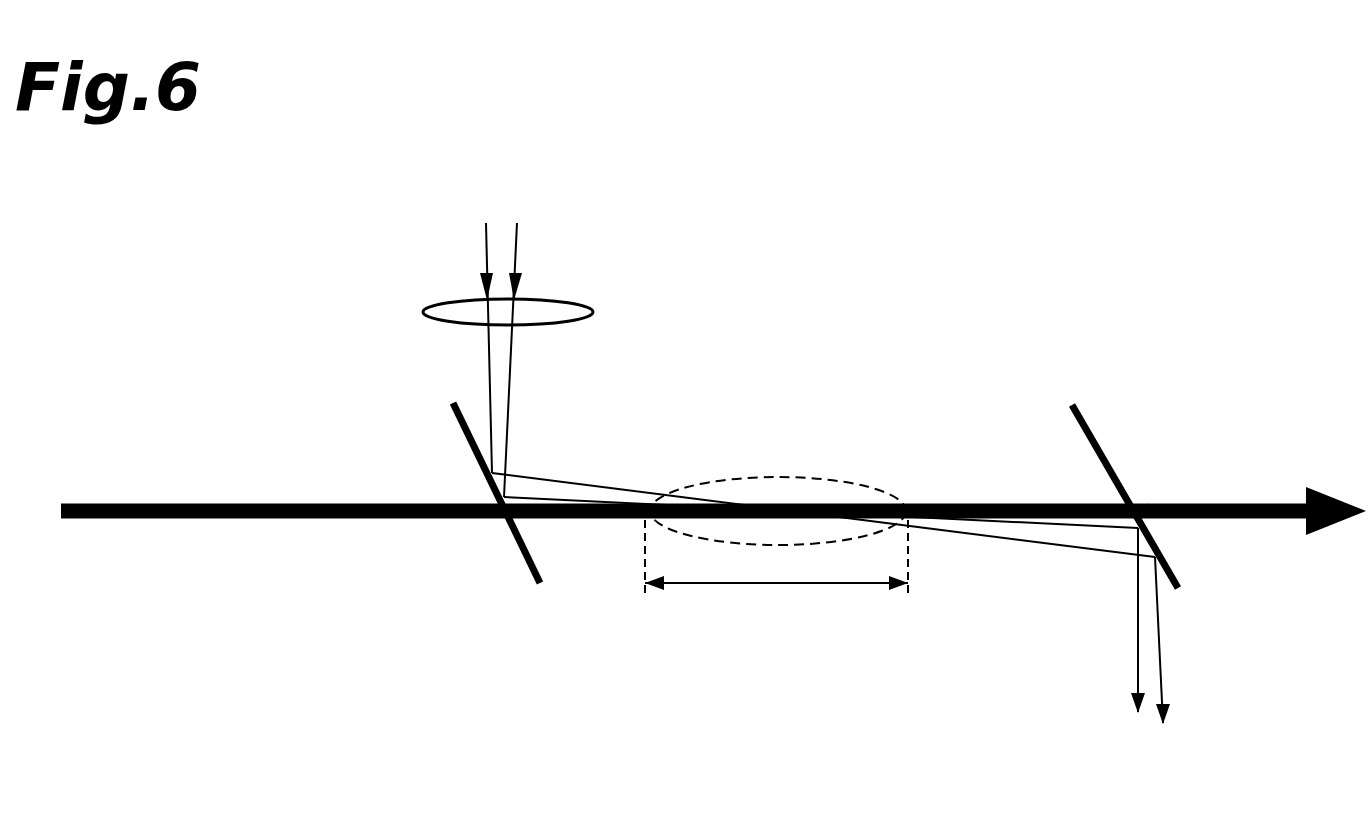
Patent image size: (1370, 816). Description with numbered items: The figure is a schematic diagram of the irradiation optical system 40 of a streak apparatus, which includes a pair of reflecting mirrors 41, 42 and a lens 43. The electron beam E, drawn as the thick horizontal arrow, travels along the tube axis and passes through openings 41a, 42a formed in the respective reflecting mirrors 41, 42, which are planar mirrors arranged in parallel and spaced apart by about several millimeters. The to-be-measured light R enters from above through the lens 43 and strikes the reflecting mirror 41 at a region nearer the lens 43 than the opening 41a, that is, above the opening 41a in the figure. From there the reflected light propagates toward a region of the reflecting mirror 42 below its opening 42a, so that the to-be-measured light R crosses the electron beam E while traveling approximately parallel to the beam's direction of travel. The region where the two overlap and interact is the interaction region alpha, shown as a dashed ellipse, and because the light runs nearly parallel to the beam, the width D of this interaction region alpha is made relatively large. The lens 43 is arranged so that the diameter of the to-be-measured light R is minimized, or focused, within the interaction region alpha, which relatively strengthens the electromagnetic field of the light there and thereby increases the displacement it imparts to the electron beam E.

The irradiation optical system 40 is at (853, 251).
The reflecting mirror 41 is at (468, 421).
The opening 41a is at (488, 512).
The reflecting mirror 42 is at (1070, 412).
The opening 42a is at (1128, 506).
The lens 43 is at (594, 309).
The to-be-measured light R is at (485, 247).
The electron beam E is at (980, 504).
The interaction region alpha is at (797, 477).
The width of the interaction region D is at (776, 571).